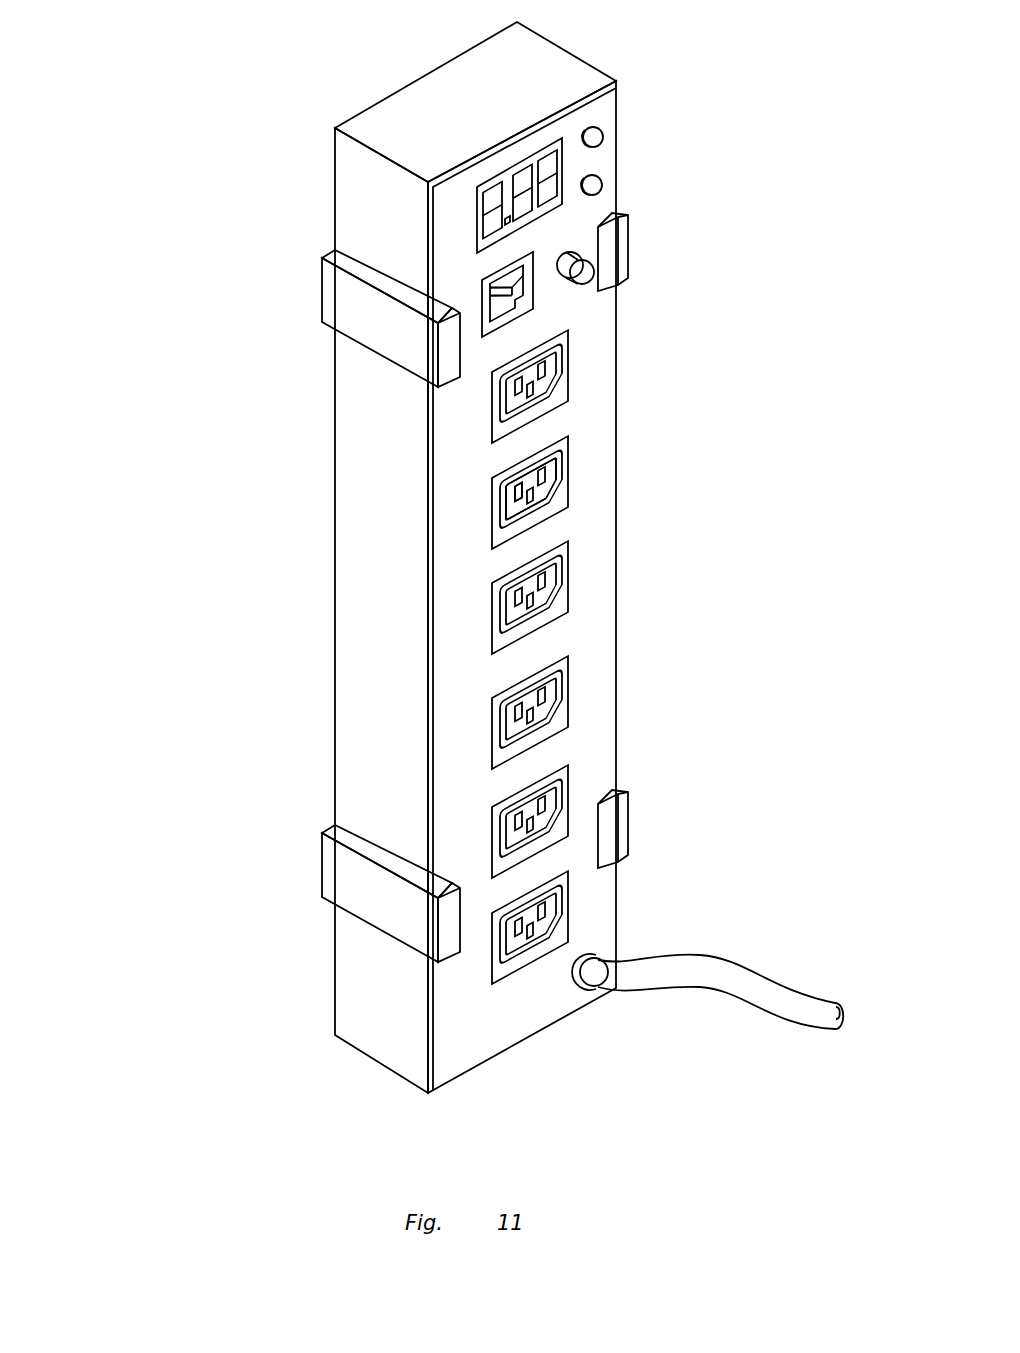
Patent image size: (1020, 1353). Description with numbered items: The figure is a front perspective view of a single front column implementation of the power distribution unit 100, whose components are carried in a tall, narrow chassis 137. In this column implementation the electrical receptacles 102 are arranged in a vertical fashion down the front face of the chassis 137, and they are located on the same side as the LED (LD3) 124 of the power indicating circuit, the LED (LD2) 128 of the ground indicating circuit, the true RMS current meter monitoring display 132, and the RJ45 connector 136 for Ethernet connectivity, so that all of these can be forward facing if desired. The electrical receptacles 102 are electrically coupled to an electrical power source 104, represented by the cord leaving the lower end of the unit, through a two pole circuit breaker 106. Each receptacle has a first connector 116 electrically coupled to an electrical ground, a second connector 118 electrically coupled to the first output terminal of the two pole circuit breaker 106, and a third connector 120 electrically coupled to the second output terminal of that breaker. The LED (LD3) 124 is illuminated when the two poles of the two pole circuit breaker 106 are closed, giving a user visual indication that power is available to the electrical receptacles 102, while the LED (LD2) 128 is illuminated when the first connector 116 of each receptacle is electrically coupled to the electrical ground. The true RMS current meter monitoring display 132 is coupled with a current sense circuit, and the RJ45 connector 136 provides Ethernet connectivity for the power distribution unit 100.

The power distribution unit 100 is at (195, 1154).
The electrical receptacles 102 is at (568, 487).
The electrical power source 104 is at (793, 992).
The two pole circuit breaker 106 is at (578, 286).
The first connector 116 is at (530, 494).
The second connector 118 is at (518, 490).
The third connector 120 is at (548, 478).
The LED (LD3) 124 is at (603, 187).
The LED (LD2) 128 is at (603, 137).
The true RMS current meter monitoring display 132 is at (525, 157).
The RJ45 connector 136 is at (482, 302).
The chassis 137 is at (392, 113).